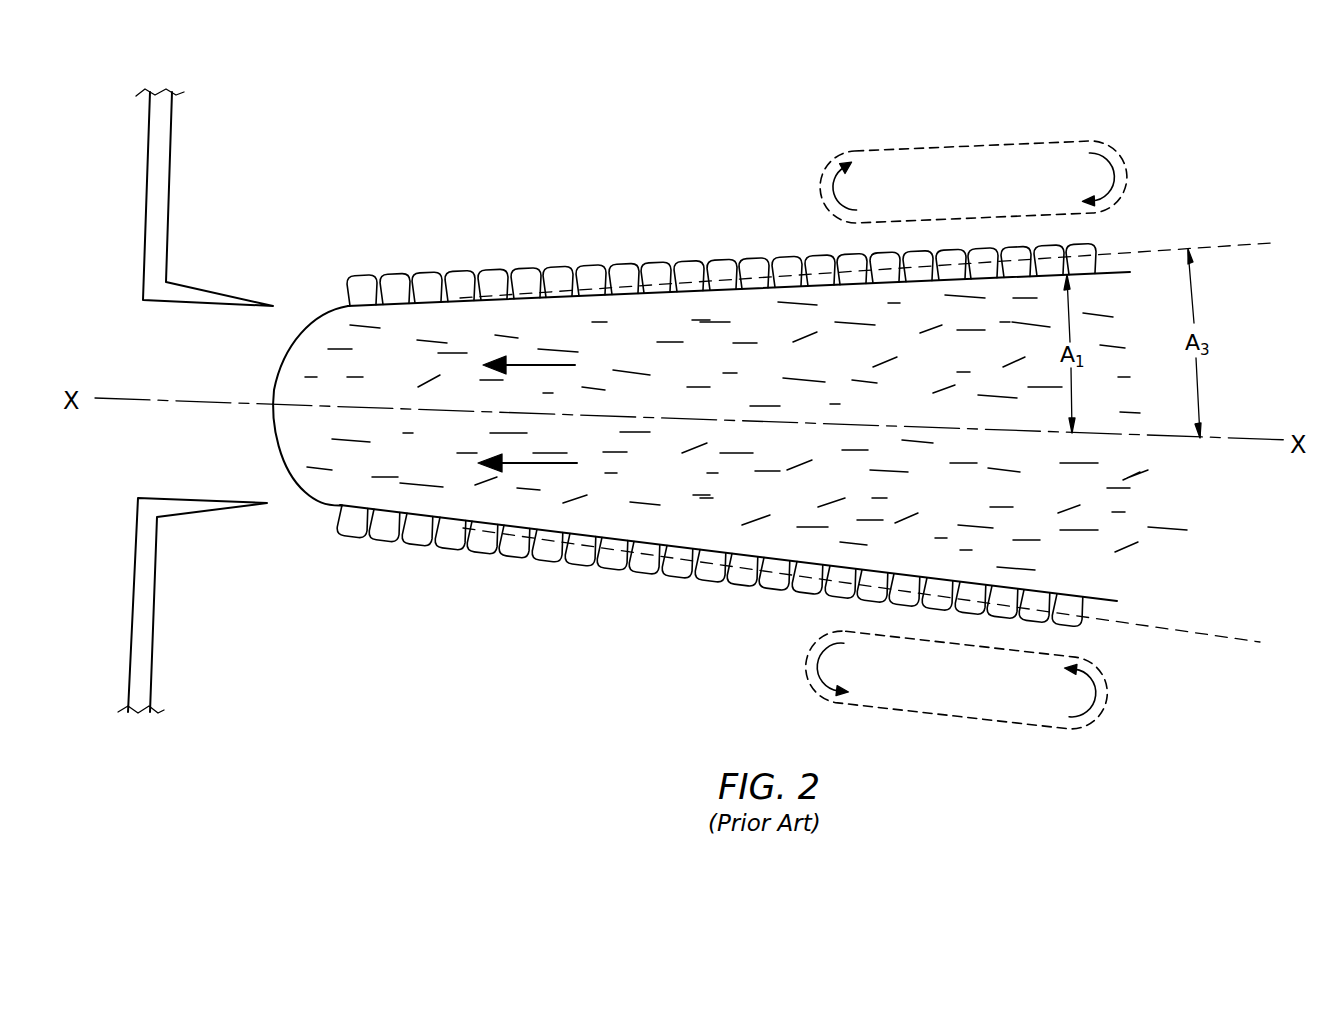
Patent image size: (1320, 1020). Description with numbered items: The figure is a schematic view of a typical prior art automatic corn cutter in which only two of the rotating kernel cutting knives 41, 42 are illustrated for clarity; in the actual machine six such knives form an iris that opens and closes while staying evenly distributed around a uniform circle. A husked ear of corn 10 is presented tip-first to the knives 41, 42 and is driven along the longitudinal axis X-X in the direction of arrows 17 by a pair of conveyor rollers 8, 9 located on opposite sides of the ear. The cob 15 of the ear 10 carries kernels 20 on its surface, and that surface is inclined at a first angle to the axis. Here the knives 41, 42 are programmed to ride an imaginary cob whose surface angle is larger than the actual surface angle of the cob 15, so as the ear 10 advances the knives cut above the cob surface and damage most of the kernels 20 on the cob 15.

The conveyor roller 8 is at (1018, 143).
The conveyor roller 9 is at (877, 705).
The ear of corn 10 is at (445, 145).
The cob 15 is at (398, 348).
The arrows indicating direction of movement 17 is at (535, 465).
The kernels 20 is at (587, 260).
The kernel cutting knife 41 is at (170, 183).
The kernel cutting knife 42 is at (155, 608).